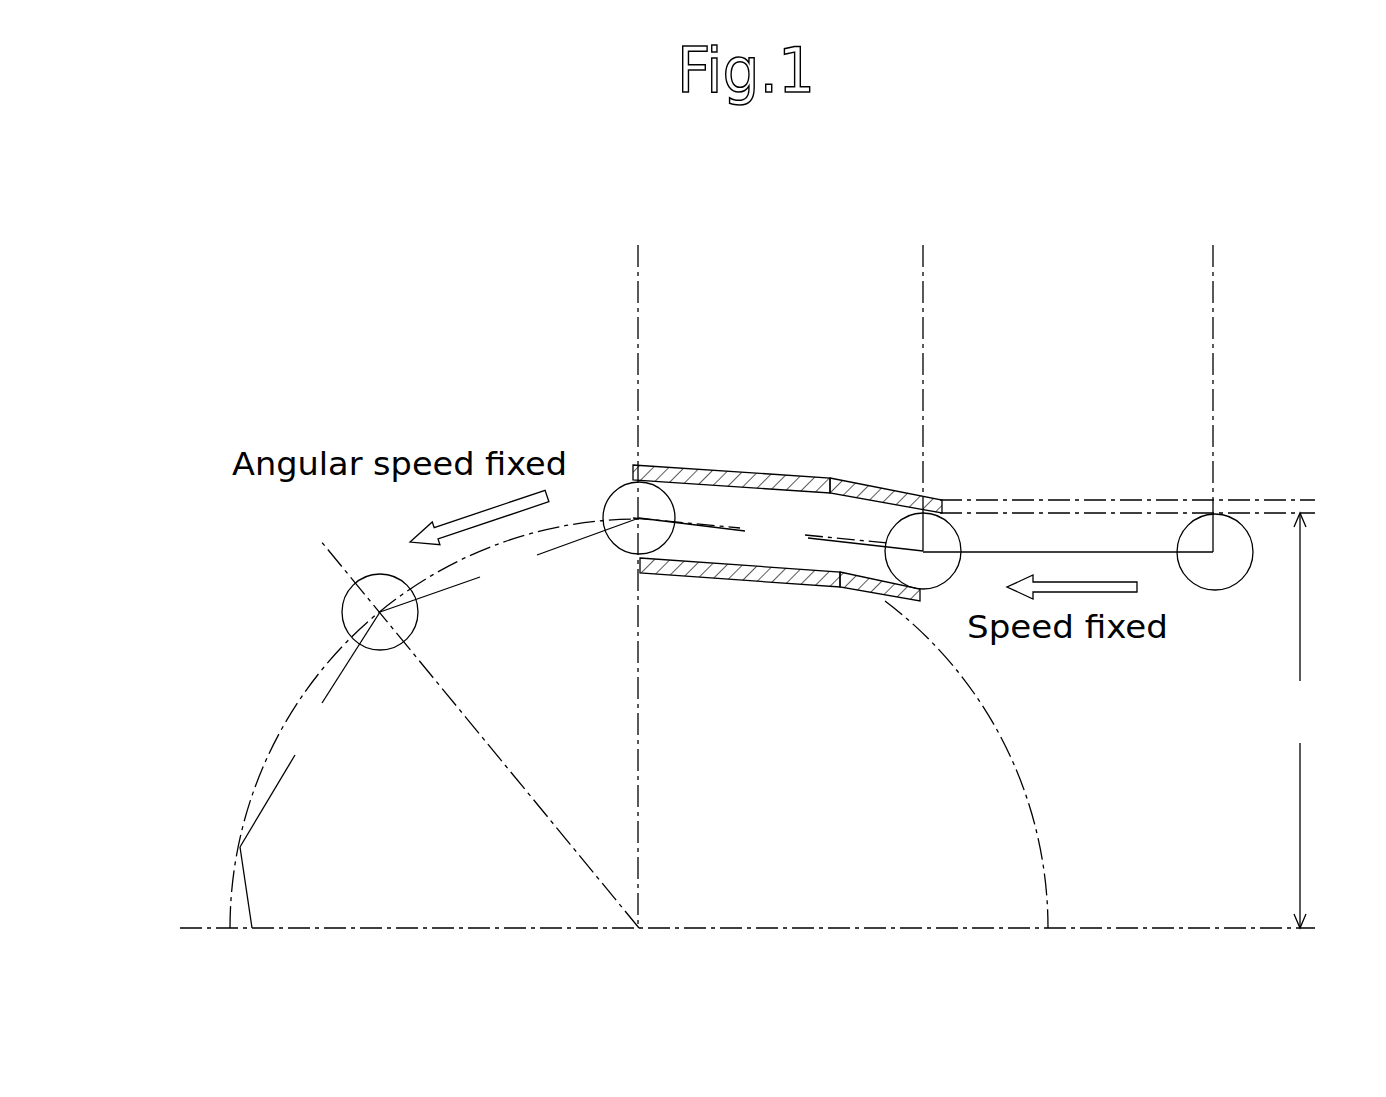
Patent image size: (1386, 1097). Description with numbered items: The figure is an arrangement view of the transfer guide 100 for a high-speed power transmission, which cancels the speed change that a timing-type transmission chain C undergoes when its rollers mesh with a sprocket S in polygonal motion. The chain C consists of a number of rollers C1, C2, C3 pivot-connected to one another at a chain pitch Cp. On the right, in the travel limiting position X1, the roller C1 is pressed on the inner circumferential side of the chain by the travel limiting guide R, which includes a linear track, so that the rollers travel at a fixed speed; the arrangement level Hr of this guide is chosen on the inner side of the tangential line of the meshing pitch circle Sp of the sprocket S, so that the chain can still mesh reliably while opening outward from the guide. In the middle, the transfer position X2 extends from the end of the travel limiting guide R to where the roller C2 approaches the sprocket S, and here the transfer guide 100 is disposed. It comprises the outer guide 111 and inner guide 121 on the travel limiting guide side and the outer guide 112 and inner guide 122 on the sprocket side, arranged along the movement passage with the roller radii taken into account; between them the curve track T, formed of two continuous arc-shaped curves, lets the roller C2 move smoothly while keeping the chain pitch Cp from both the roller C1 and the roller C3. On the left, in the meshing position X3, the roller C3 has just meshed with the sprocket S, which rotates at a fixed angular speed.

The transfer guide for a high-speed power transmission 100 is at (789, 503).
The outer guide provided on a sprocket S side 112 is at (694, 462).
The outer guide provided on a travel limiting guide R side 111 is at (826, 476).
The inner guide provided on the sprocket S side 122 is at (698, 575).
The inner guide provided on the travel limiting guide R side 121 is at (843, 592).
The roller traveling on the travel limiting guide R C1 is at (1215, 590).
The roller sent from the travel limiting guide R C2 is at (948, 495).
The roller which has just meshed with the sprocket S C3 is at (612, 490).
The transmission chain C is at (1007, 550).
The travel limiting guide R is at (1127, 498).
The curve track T is at (850, 542).
The chain pitch Cp is at (666, 721).
The meshing pitch circle for the sprocket S Sp is at (265, 768).
The sprocket S is at (730, 881).
The arrangement level of the travel limiting guide R Hr is at (1302, 720).
The travel limiting position X1 is at (1207, 280).
The transfer position X2 is at (917, 280).
The meshing position X3 is at (492, 586).